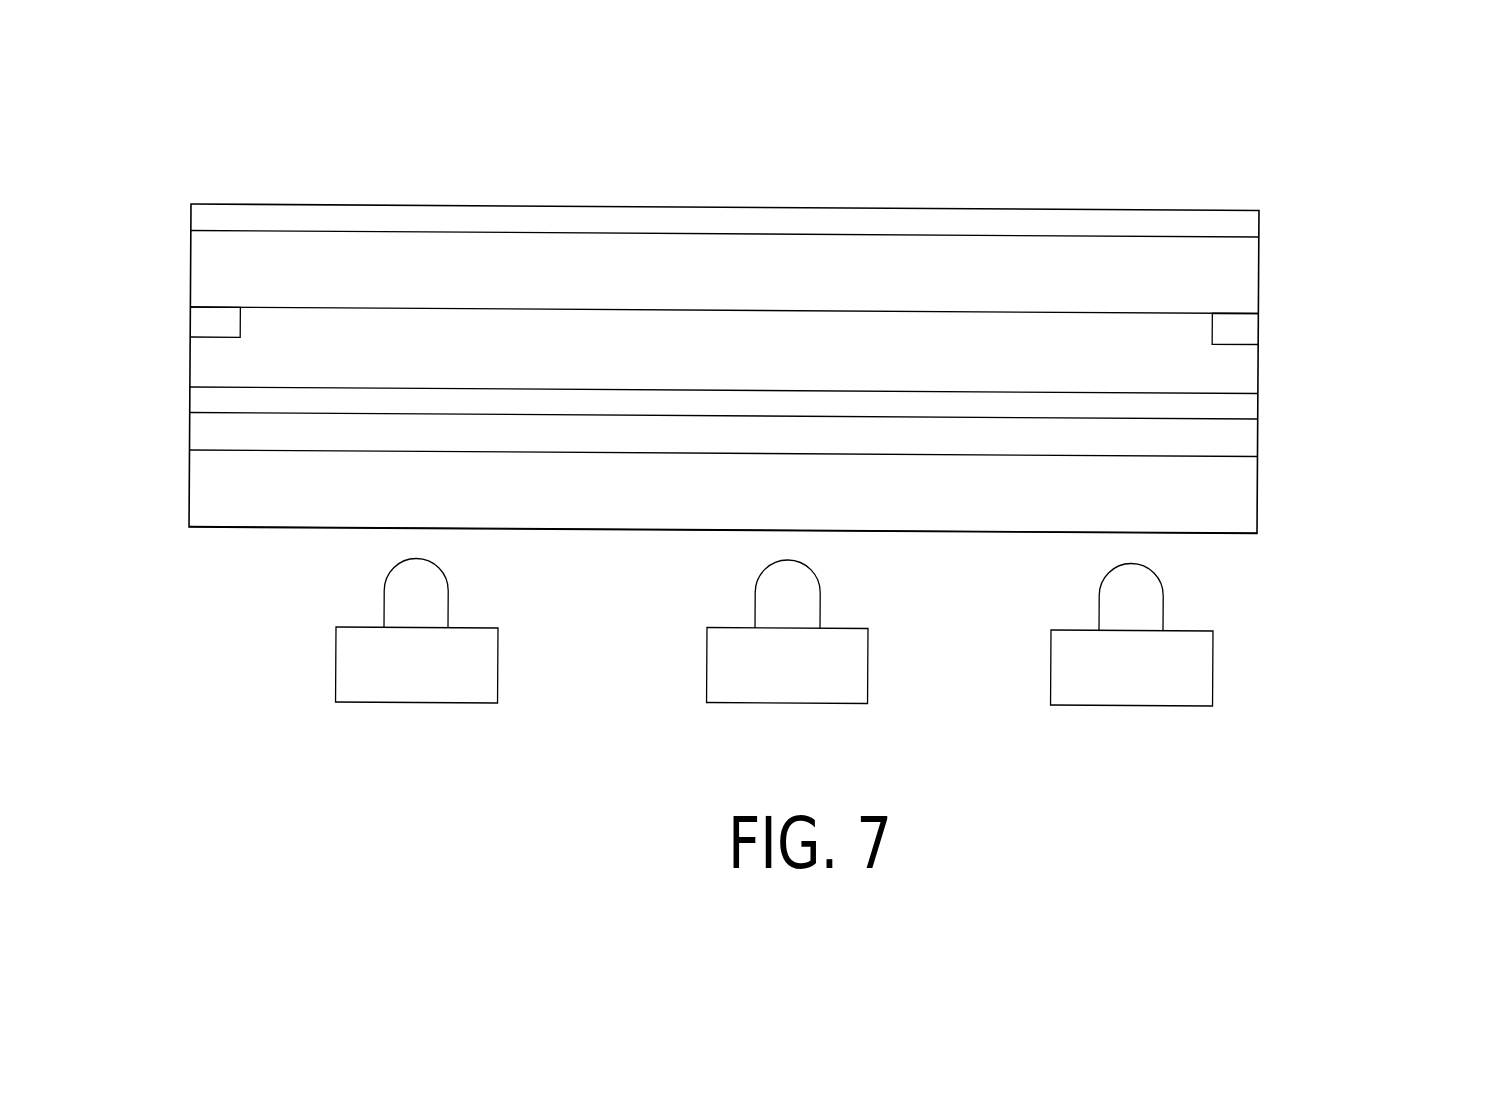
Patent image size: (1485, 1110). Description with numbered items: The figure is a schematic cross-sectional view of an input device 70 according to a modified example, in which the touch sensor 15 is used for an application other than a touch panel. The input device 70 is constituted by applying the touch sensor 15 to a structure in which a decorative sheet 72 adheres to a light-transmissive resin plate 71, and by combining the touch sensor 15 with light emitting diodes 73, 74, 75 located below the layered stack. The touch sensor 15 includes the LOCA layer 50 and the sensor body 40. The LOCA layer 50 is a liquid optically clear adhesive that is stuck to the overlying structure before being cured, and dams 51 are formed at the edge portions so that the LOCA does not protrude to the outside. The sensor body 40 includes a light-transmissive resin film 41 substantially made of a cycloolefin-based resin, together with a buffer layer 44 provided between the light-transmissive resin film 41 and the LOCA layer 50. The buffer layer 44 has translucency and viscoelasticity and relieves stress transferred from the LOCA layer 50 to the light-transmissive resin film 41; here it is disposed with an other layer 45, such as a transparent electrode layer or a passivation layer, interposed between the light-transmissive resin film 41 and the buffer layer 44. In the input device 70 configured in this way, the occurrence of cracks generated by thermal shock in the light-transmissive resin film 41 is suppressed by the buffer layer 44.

The input device 70 is at (745, 155).
The decorative sheet 72 is at (1222, 223).
The light-transmissive resin plate 71 is at (1216, 287).
The dam 51 is at (205, 325).
The LOCA layer 50 is at (1228, 374).
The buffer layer 44 is at (1227, 410).
The other layer 45 is at (1230, 440).
The light-transmissive resin film 41 is at (1230, 502).
The sensor body 40 is at (1348, 403).
The touch sensor 15 is at (1407, 316).
The light emitting diode 73 is at (353, 648).
The light emitting diode 74 is at (725, 648).
The light emitting diode 75 is at (1070, 652).